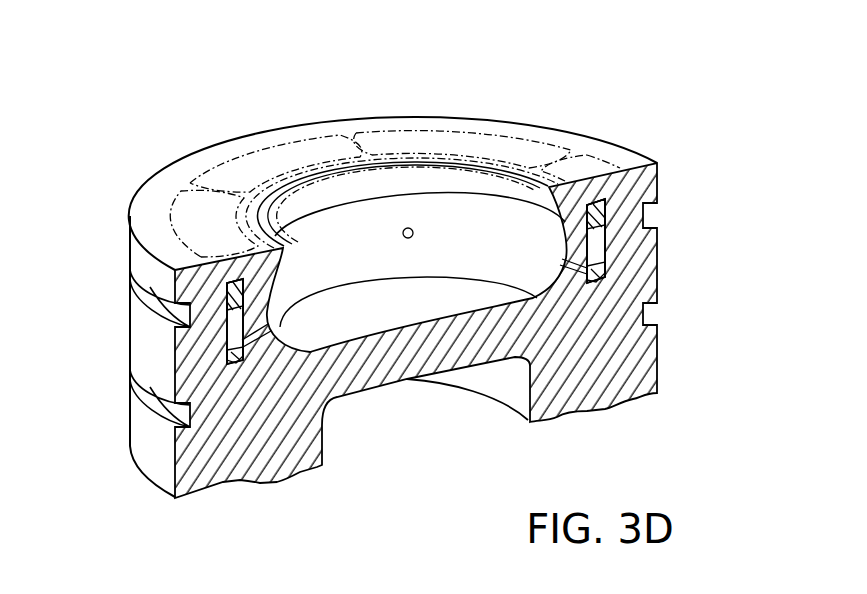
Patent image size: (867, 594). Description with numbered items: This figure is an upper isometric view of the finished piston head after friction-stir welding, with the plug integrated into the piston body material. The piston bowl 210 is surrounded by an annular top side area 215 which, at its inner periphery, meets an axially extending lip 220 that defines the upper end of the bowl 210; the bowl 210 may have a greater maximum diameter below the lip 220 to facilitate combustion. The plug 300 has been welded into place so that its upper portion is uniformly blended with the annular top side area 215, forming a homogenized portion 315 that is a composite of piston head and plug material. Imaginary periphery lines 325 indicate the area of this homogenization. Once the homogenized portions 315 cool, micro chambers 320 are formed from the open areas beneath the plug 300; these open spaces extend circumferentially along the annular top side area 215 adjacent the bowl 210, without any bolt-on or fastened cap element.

The piston bowl 210 is at (367, 237).
The annular top side area 215 is at (632, 158).
The axially extending lip 220 is at (531, 197).
The plug 300 is at (227, 298).
The homogenized portion 315 is at (254, 170).
The micro chambers 320 is at (235, 328).
The imaginary periphery lines 325 is at (490, 119).